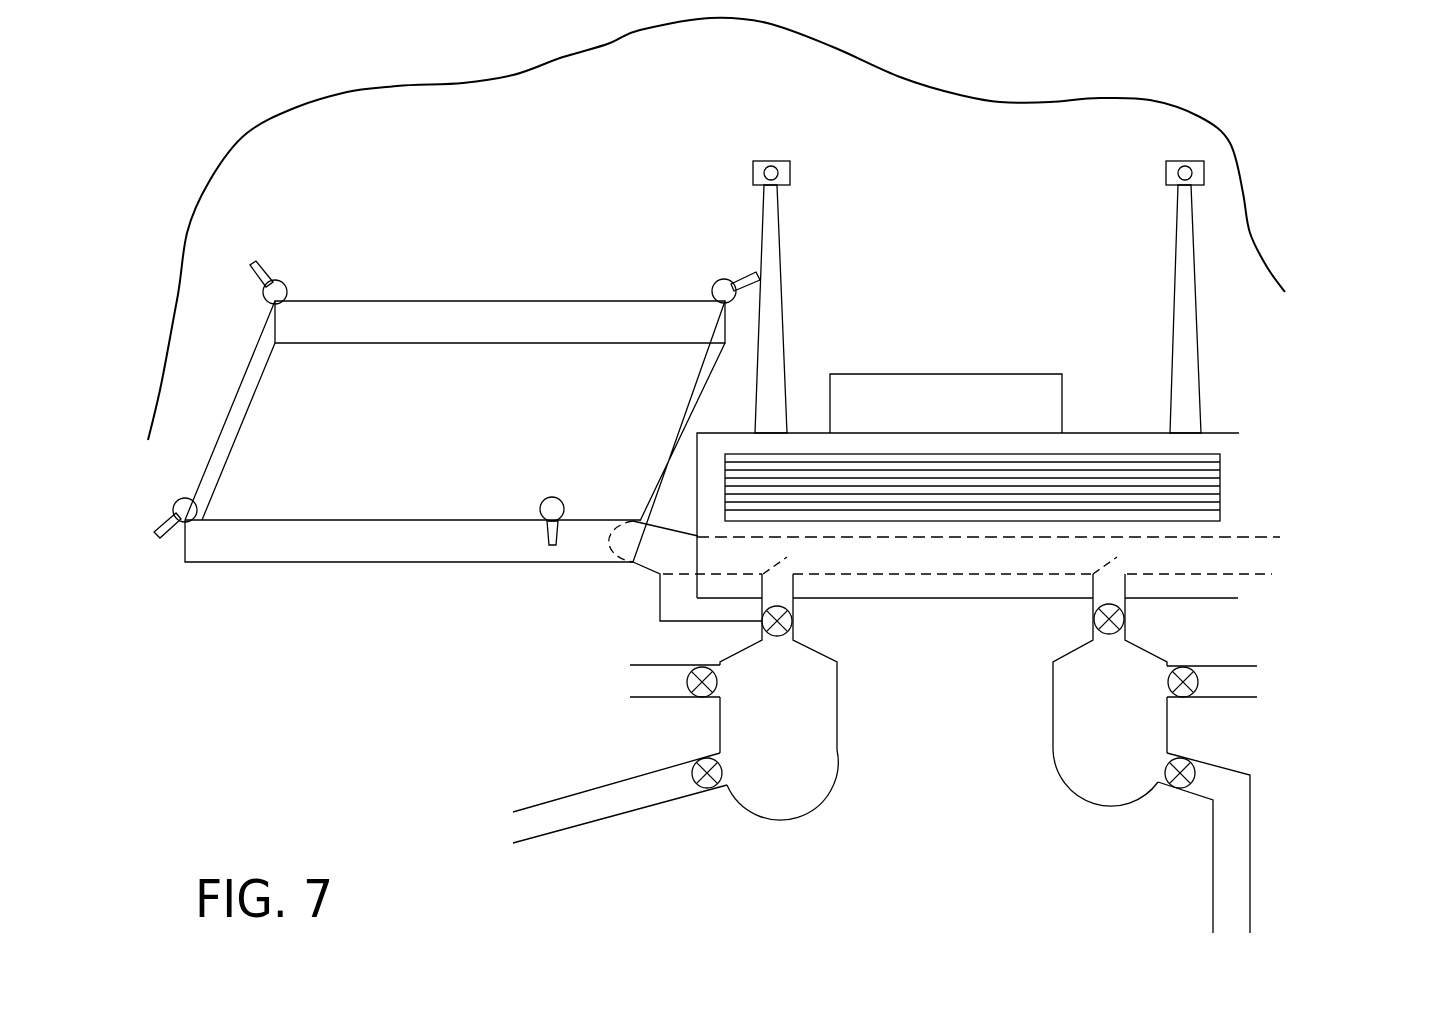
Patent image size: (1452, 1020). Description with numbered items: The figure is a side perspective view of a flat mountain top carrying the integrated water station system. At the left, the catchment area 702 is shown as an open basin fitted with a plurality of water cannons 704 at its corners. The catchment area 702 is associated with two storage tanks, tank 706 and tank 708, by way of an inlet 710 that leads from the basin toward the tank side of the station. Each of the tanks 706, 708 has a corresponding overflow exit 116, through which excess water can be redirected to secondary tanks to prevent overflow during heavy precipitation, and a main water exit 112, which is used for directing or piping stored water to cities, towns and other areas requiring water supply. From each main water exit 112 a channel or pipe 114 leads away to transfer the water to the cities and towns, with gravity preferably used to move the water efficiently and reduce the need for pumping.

The catchment area 702 is at (433, 507).
The water cannons 704 is at (157, 537).
The tank 706 is at (797, 737).
The tank 708 is at (1132, 728).
The inlet 710 is at (688, 584).
The overflow exit 116 is at (643, 689).
The main water exit 112 is at (685, 778).
The channel and/or pipe 114 is at (537, 823).